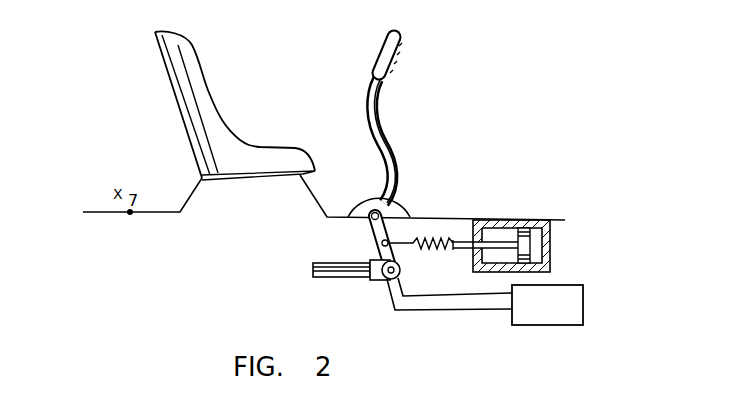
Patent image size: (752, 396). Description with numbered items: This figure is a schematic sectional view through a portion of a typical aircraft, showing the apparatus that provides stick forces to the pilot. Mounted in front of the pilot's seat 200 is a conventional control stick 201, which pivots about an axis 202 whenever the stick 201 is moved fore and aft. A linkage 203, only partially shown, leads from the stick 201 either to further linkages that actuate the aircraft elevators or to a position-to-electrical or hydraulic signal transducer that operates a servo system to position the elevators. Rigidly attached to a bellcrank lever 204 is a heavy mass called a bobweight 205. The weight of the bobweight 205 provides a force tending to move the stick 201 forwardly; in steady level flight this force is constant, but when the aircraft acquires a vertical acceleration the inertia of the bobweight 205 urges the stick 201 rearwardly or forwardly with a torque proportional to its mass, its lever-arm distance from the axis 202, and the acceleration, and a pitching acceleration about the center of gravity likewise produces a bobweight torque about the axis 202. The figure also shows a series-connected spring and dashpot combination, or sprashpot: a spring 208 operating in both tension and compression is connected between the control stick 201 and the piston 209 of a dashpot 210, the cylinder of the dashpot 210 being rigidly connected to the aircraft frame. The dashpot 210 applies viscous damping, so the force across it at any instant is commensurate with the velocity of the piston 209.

The pilot's seat 200 is at (222, 110).
The control stick 201 is at (383, 109).
The axis 202 is at (388, 212).
The linkage 203 is at (322, 277).
The bellcrank lever 204 is at (425, 310).
The bobweight 205 is at (528, 325).
The spring 208 is at (414, 246).
The piston 209 is at (519, 229).
The dashpot 210 is at (550, 248).